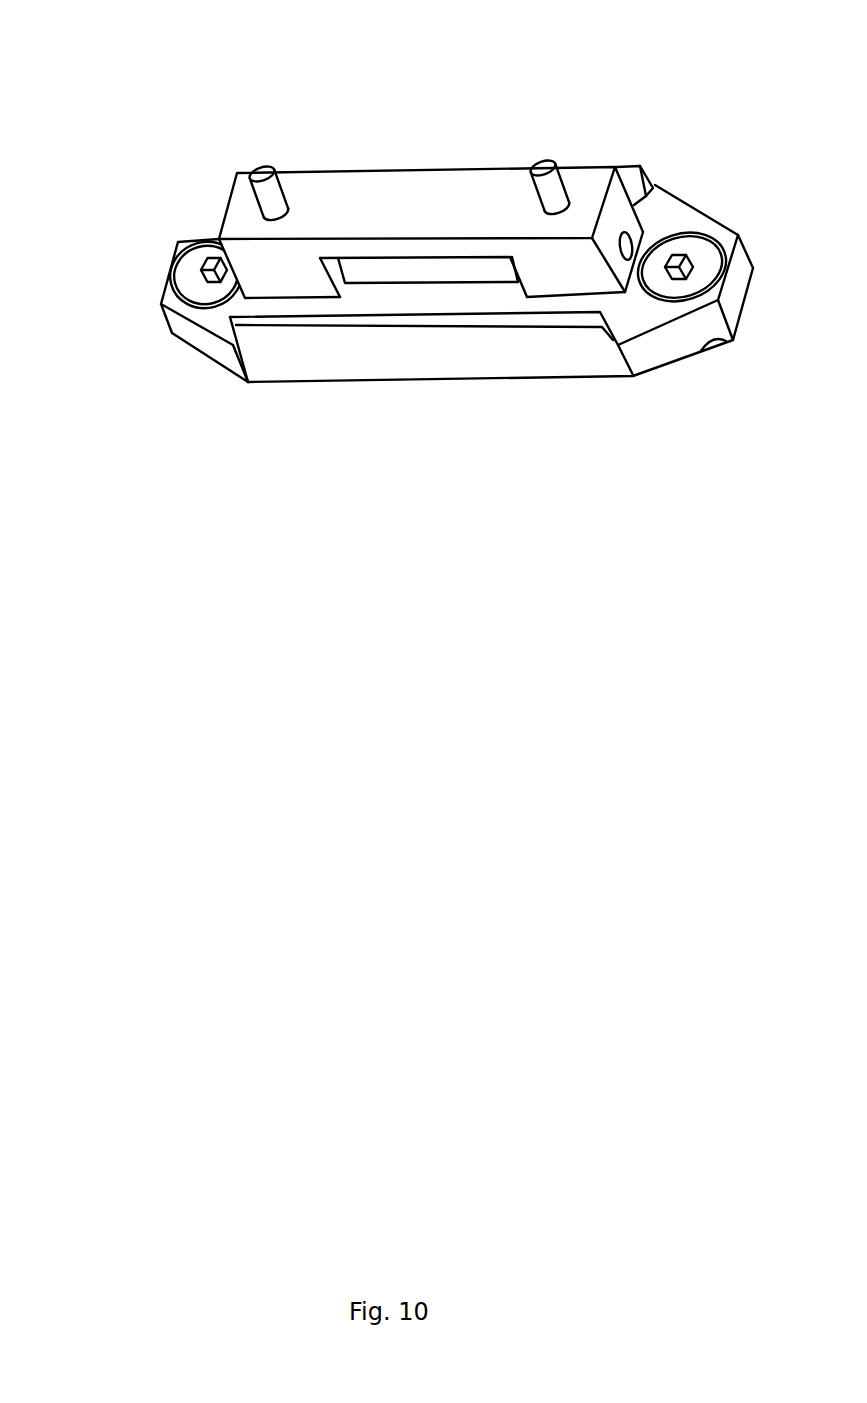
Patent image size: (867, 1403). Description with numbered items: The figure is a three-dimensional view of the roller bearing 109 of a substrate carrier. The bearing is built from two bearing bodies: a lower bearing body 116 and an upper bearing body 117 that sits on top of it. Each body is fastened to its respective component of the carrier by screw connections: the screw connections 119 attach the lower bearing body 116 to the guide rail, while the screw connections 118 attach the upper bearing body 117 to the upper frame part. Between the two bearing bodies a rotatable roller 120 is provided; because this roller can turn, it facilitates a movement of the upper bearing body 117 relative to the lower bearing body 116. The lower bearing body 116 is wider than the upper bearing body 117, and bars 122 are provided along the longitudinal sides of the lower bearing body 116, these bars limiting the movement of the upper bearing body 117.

The roller bearing 109 is at (187, 373).
The lower bearing body 116 is at (335, 358).
The upper bearing body 117 is at (390, 200).
The screw connections 118 is at (256, 173).
The screw connections 119 is at (678, 248).
The rotatable roller 120 is at (442, 268).
The bars 122 is at (645, 163).